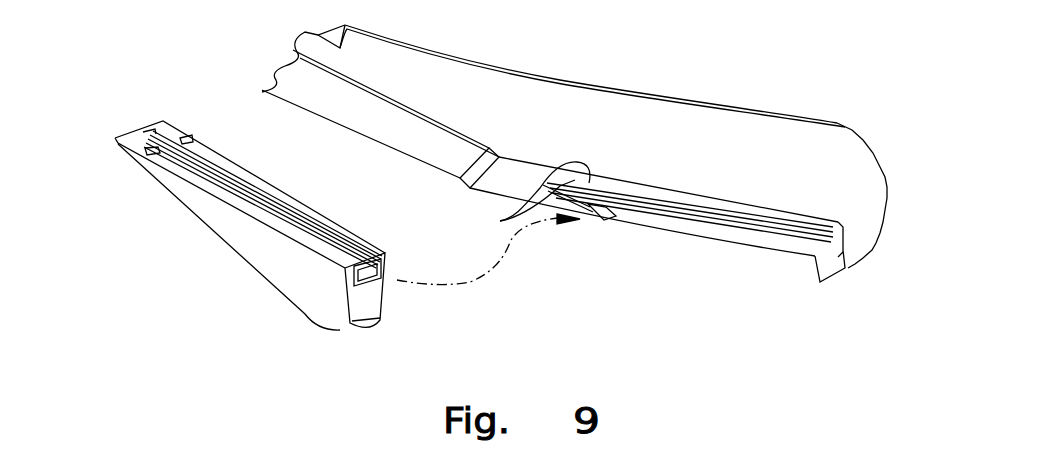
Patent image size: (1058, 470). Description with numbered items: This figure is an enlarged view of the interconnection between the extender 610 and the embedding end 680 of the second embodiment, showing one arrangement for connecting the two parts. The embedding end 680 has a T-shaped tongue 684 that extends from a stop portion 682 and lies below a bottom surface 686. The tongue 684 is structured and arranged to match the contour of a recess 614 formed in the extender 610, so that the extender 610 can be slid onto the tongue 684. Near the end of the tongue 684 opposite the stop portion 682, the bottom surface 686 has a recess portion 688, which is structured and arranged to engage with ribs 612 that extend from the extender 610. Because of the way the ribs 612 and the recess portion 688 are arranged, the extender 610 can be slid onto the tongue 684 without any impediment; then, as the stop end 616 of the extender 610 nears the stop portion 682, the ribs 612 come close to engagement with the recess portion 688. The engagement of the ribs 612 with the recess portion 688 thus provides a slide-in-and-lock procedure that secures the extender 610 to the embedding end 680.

The extender 610 is at (249, 257).
The ribs 612 is at (189, 137).
The recess 614 is at (383, 282).
The stop end 616 is at (372, 307).
The embedding end 680 is at (710, 117).
The stop portion 682 is at (857, 250).
The T-shaped tongue 684 is at (746, 250).
The bottom surface 686 is at (671, 201).
The recess portion 688 is at (500, 221).